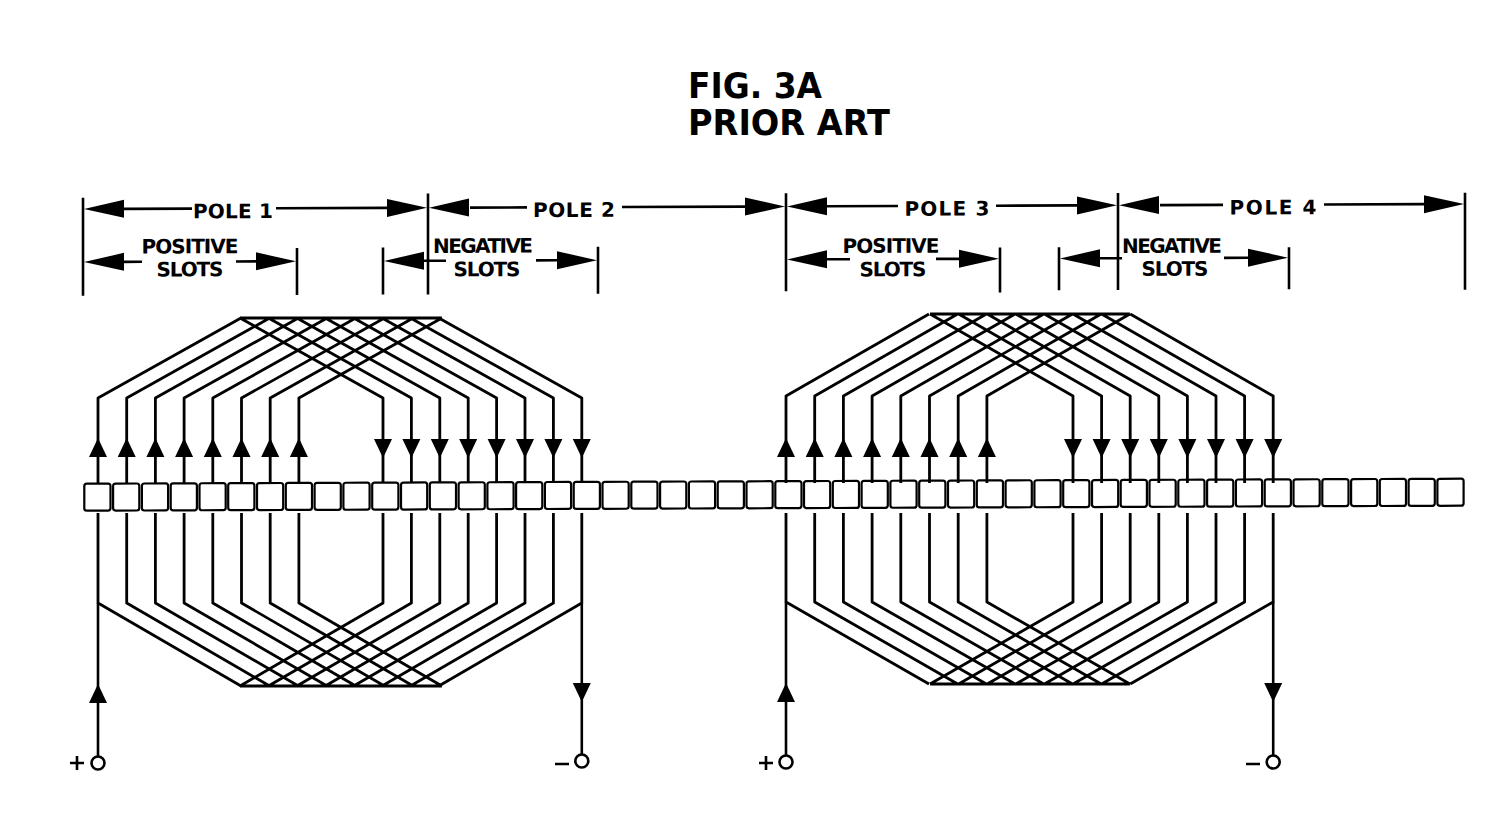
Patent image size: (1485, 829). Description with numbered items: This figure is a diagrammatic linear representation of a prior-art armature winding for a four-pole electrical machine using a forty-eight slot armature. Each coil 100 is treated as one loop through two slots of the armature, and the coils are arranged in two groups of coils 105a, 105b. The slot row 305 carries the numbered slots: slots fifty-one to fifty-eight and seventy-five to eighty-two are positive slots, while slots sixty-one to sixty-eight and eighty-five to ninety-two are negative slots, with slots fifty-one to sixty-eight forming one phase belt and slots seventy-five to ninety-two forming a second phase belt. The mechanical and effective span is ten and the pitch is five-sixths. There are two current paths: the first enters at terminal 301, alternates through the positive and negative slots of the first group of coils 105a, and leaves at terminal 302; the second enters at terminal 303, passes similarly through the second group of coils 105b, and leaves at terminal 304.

The coil 100 is at (515, 364).
The first group of coils 105a is at (499, 336).
The second group of coils 105b is at (1191, 334).
The current path terminal 301 is at (111, 746).
The current path terminal 302 is at (590, 739).
The current path terminal 303 is at (803, 740).
The current path terminal 304 is at (1289, 740).
The slot row 305 is at (1362, 472).